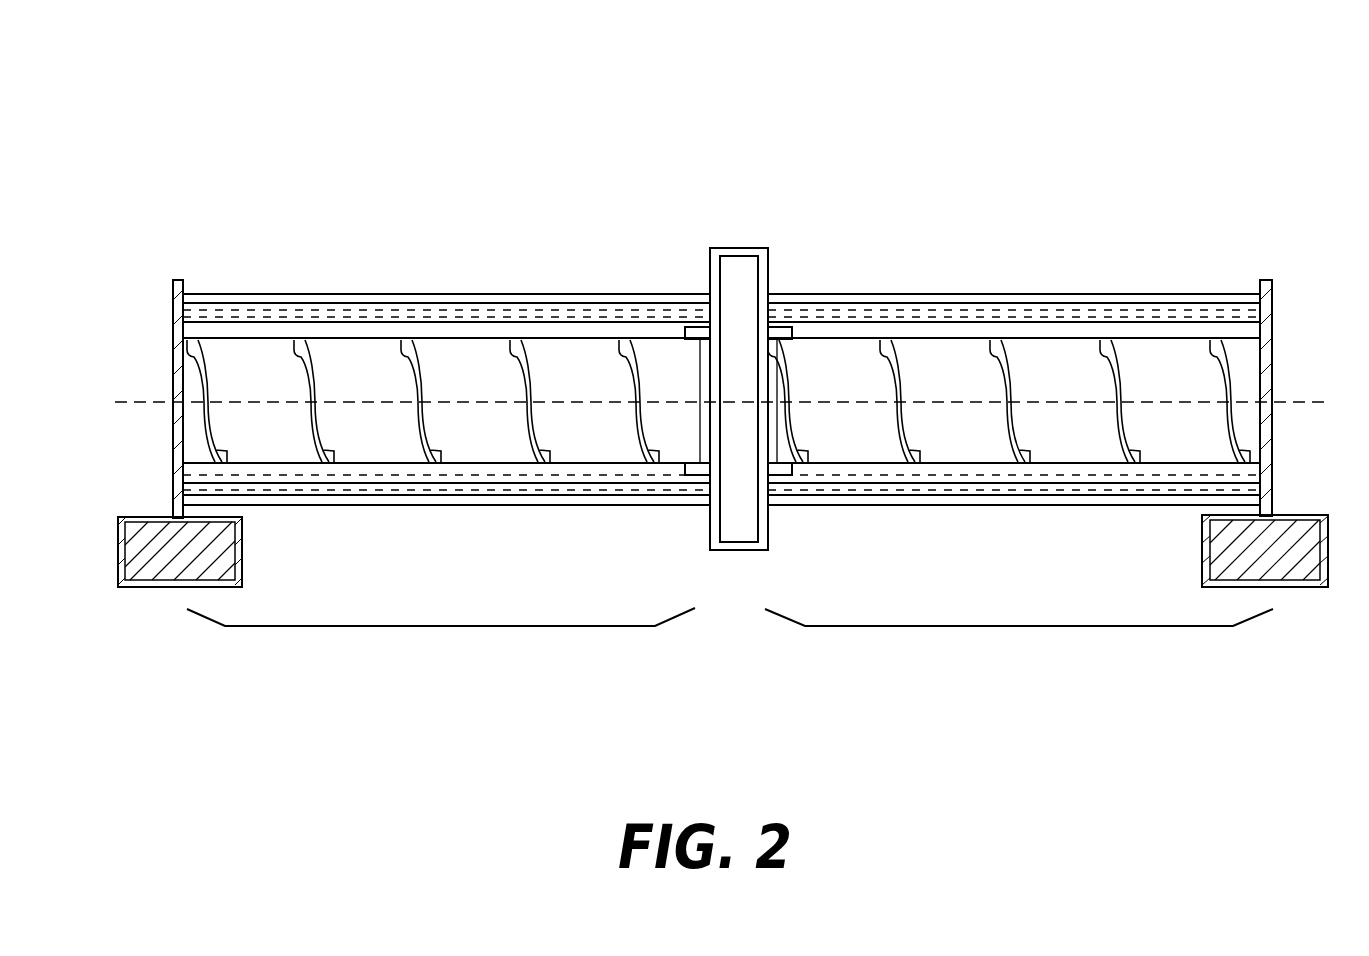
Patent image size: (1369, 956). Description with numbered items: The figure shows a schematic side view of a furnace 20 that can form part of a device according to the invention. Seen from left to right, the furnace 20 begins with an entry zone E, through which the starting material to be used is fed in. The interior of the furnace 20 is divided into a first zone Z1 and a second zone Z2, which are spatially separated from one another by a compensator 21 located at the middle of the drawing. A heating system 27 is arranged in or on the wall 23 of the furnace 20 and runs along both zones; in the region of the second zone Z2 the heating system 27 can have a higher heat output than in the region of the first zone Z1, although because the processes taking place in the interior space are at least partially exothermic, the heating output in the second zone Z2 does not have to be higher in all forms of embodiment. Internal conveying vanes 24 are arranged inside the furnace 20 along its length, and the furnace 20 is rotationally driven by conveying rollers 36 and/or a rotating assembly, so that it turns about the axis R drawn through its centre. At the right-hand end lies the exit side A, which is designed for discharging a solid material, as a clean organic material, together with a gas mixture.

The furnace 20 is at (458, 109).
The compensator 21 is at (735, 228).
The wall 23 is at (595, 337).
The internal conveying vanes 24 is at (420, 358).
The heating system 27 is at (340, 293).
The conveying rollers 36 is at (1297, 516).
The entry zone E is at (220, 279).
The exit side A is at (1232, 281).
The rotation axis R is at (735, 398).
The first zone Z1 is at (442, 627).
The second zone Z2 is at (1037, 627).